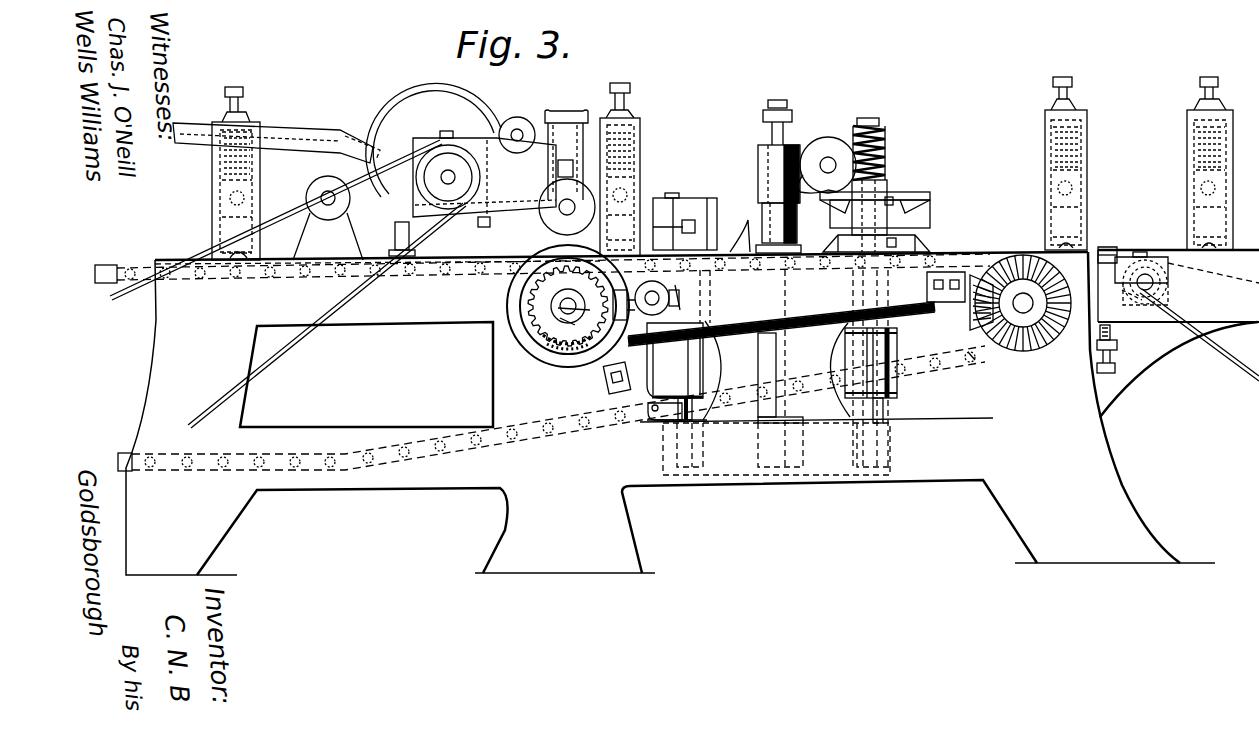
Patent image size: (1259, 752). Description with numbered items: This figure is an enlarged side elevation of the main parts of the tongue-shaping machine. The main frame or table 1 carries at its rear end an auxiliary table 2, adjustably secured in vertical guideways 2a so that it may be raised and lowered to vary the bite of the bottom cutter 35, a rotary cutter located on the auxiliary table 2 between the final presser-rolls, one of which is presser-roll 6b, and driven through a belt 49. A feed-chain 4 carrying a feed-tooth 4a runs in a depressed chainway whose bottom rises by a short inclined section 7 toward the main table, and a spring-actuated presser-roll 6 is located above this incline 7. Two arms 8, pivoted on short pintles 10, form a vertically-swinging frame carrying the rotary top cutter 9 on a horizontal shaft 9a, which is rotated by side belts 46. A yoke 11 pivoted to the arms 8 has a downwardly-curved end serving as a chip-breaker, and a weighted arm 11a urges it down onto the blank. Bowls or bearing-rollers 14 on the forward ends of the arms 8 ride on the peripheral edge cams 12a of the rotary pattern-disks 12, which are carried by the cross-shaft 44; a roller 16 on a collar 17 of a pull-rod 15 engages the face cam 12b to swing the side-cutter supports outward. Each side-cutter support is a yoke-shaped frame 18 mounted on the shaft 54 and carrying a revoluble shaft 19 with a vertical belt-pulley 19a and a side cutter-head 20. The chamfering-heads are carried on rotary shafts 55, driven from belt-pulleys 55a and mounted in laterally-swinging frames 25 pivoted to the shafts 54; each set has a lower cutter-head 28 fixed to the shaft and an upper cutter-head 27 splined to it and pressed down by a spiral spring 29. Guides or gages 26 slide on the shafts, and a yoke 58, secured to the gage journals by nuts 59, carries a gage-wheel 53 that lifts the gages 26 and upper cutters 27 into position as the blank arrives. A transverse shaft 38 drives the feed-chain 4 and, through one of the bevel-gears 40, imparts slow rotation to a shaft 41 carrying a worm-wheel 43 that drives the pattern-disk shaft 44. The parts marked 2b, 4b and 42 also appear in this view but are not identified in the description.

The main frame or table 1 is at (670, 413).
The auxiliary table 2 is at (1178, 333).
The vertical guideways 2a is at (1108, 252).
The adjusting bolt 2b is at (1115, 357).
The feed-chain 4 is at (105, 284).
The feed-tooth 4a is at (205, 478).
The chain run 4b is at (960, 360).
The presser-roll 6 is at (227, 230).
The presser-roll 6b is at (1078, 215).
The inclined section 7 is at (226, 286).
The arms 8 is at (484, 174).
The top cutter 9 is at (480, 222).
The horizontal shaft 9a is at (446, 177).
The pintles 10 is at (328, 206).
The yoke 11 is at (478, 120).
The weighted arm 11a is at (303, 137).
The pattern-disk 12 is at (551, 307).
The peripheral edge cam 12a is at (509, 281).
The cam or incline 12b is at (548, 362).
The bowls or bearing-rollers 14 is at (547, 172).
The pull-rod 15 is at (660, 293).
The bowl or roller 16 is at (640, 290).
The collar 17 is at (682, 300).
The yoke-shaped frame 18 is at (765, 370).
The revoluble shaft 19 is at (683, 400).
The belt-pulley 19a is at (684, 345).
The side cutter-head 20 is at (697, 202).
The laterally-swinging frame 25 is at (776, 410).
The guide or gage 26 is at (932, 214).
The upper cutter-head 27 is at (925, 192).
The lower cutter-head 28 is at (925, 242).
The spiral spring 29 is at (880, 160).
The rotary cutter 35 is at (1155, 251).
The transverse shaft 38 is at (1030, 315).
The bevel-gears 40 is at (1005, 340).
The shaft 41 is at (740, 337).
The bracket 42 is at (576, 368).
The worm-wheel 43 is at (546, 322).
The cross-shaft 44 is at (561, 320).
The side belts 46 is at (290, 340).
The belt 49 is at (1238, 370).
The gage-wheel 53 is at (828, 138).
The shaft 54 is at (770, 125).
The rotary shaft 55 is at (884, 410).
The belt-pulleys 55a is at (895, 349).
The yoke 58 is at (762, 192).
The nuts 59 is at (758, 150).